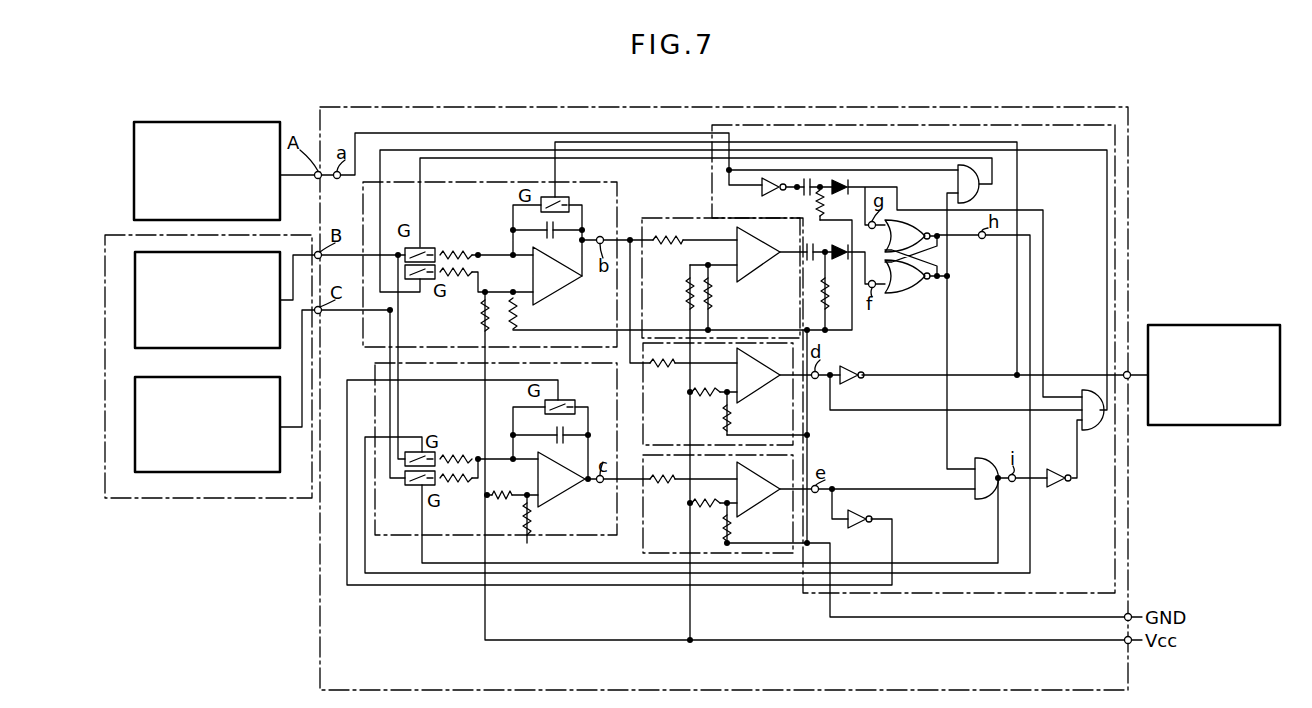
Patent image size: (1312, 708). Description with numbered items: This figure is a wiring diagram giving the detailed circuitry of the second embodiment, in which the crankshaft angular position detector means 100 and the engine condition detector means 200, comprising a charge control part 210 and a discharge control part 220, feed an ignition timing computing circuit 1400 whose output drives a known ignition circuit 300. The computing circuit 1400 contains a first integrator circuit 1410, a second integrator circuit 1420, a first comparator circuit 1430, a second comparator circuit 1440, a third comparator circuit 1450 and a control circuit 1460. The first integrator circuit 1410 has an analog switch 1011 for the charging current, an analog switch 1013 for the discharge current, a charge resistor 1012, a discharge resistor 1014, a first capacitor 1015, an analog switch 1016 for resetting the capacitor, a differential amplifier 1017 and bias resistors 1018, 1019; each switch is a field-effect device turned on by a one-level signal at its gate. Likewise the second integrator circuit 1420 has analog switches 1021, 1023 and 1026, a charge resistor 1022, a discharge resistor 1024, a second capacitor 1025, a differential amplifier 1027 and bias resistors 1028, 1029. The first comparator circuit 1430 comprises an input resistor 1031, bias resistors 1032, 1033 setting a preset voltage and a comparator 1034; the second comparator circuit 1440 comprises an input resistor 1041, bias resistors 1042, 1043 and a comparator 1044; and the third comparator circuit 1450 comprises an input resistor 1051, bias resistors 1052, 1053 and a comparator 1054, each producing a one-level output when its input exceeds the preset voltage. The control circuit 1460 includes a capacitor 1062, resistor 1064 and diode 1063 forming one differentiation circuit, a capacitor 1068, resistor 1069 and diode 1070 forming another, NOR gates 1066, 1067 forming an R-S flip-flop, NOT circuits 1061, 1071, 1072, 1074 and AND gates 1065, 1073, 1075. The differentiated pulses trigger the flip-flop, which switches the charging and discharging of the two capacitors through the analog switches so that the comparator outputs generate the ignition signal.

The crankshaft angular position detector means 100 is at (213, 122).
The engine condition detector means 200 is at (232, 499).
The charge control part 210 is at (135, 293).
The discharge control part 220 is at (135, 416).
The ignition circuit 300 is at (1232, 322).
The ignition timing computing circuit 1400 is at (317, 597).
The first integrator circuit 1410 is at (612, 212).
The second integrator circuit 1420 is at (468, 540).
The first comparator circuit 1430 is at (643, 218).
The second comparator circuit 1440 is at (643, 440).
The third comparator circuit 1450 is at (666, 555).
The control circuit 1460 is at (1073, 125).
The analog switch 1011 is at (425, 247).
The charge resistor 1012 is at (462, 252).
The analog switch 1013 is at (421, 291).
The discharge resistor 1014 is at (466, 278).
The first capacitor 1015 is at (556, 228).
The analog switch 1016 is at (556, 197).
The differential amplifier 1017 is at (574, 270).
The bias resistor 1018 is at (483, 316).
The bias resistor 1019 is at (517, 312).
The analog switch 1021 is at (422, 450).
The charge resistor 1022 is at (455, 455).
The analog switch 1023 is at (406, 494).
The discharge resistor 1024 is at (458, 483).
The second capacitor 1025 is at (560, 435).
The analog switch 1026 is at (578, 396).
The differential amplifier 1027 is at (581, 473).
The bias resistor 1028 is at (505, 485).
The bias resistor 1029 is at (531, 517).
The input resistor 1031 is at (681, 245).
The bias resistor 1032 is at (688, 292).
The bias resistor 1033 is at (711, 290).
The comparator 1034 is at (758, 268).
The input resistor 1041 is at (663, 376).
The bias resistor 1042 is at (712, 380).
The bias resistor 1043 is at (731, 415).
The comparator 1044 is at (772, 363).
The input resistor 1051 is at (663, 492).
The bias resistor 1052 is at (712, 492).
The bias resistor 1053 is at (731, 527).
The comparator 1054 is at (772, 474).
The NOT circuit 1061 is at (762, 189).
The capacitor 1062 is at (800, 182).
The diode 1063 is at (840, 182).
The resistor 1064 is at (838, 206).
The AND gate 1065 is at (980, 188).
The NOR gate 1066 is at (892, 222).
The NOR gate 1067 is at (898, 290).
The capacitor 1068 is at (807, 244).
The resistor 1069 is at (820, 292).
The diode 1070 is at (845, 258).
The NOT circuit 1071 is at (858, 371).
The NOT circuit 1072 is at (875, 510).
The AND gate 1073 is at (984, 488).
The NOT circuit 1074 is at (1058, 488).
The AND gate 1075 is at (1100, 425).